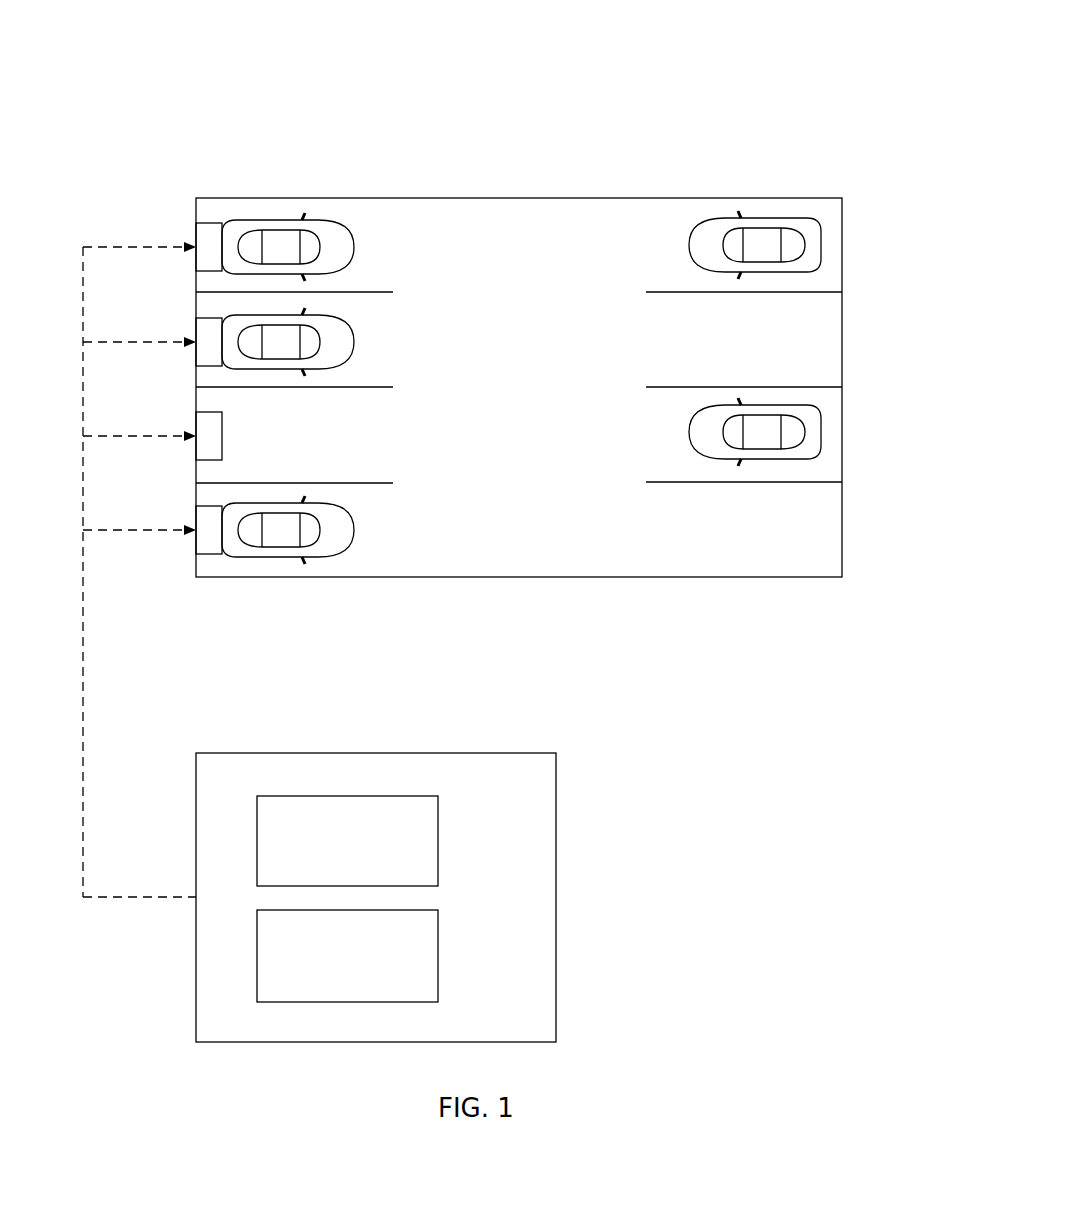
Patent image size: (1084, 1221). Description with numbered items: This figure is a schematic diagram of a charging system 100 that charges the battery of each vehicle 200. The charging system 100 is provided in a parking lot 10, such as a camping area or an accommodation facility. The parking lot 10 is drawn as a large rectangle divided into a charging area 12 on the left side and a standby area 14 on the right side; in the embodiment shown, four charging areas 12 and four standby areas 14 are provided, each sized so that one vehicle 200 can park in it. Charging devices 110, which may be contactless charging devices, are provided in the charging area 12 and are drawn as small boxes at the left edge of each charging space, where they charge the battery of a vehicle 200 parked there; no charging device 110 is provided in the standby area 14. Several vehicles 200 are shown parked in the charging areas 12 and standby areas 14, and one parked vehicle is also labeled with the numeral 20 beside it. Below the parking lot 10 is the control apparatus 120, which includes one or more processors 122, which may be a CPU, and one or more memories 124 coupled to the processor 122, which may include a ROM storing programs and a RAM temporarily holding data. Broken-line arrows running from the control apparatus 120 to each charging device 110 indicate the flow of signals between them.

The charging system 100 is at (245, 70).
The parking lot 10 is at (590, 198).
The charging area 12 is at (375, 228).
The standby area 14 is at (660, 228).
The parking space 20 is at (355, 335).
The charging device 110 is at (206, 240).
The control apparatus 120 is at (537, 752).
The processor 122 is at (440, 836).
The memory 124 is at (440, 951).
The vehicle 200 is at (283, 220).